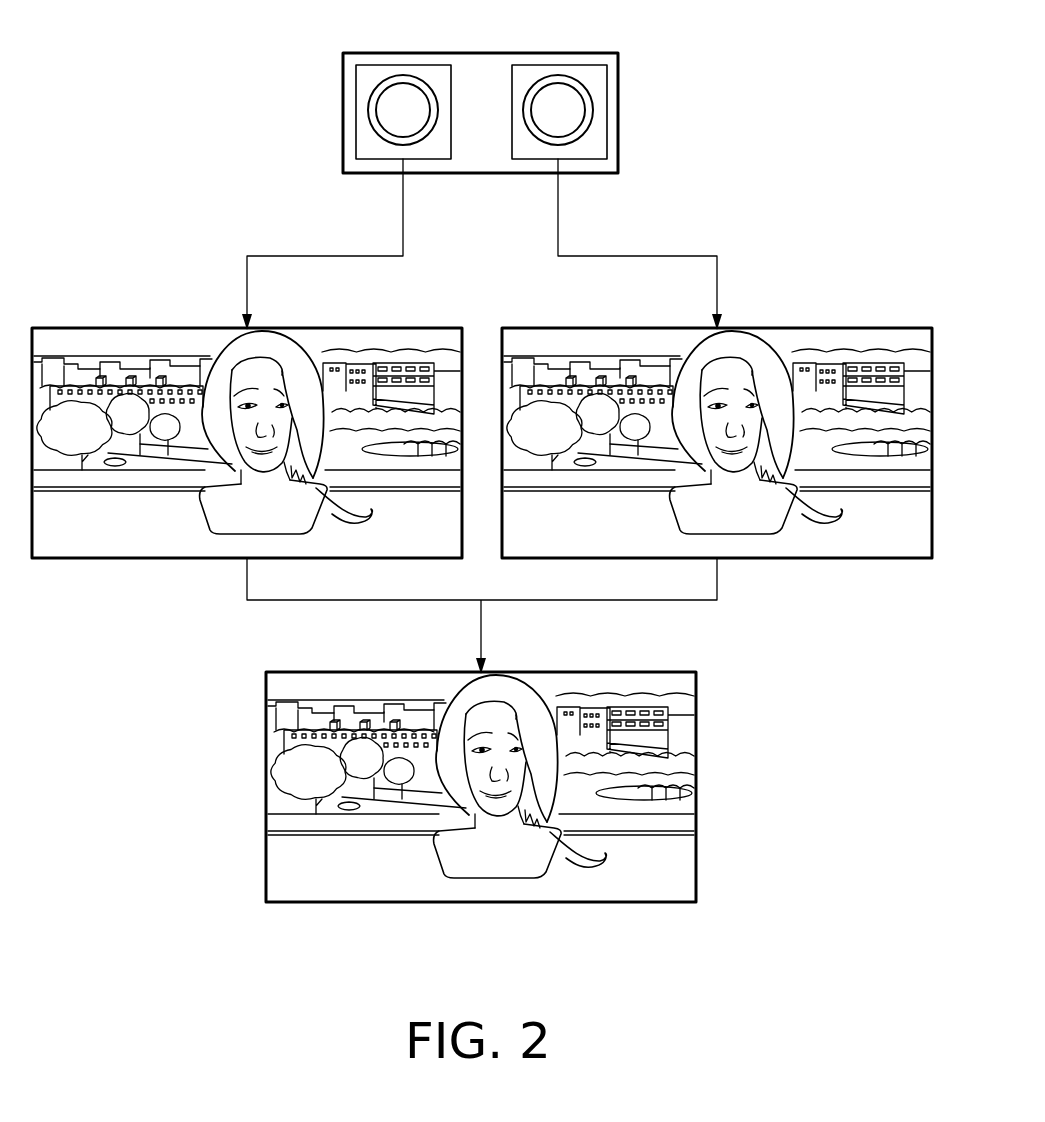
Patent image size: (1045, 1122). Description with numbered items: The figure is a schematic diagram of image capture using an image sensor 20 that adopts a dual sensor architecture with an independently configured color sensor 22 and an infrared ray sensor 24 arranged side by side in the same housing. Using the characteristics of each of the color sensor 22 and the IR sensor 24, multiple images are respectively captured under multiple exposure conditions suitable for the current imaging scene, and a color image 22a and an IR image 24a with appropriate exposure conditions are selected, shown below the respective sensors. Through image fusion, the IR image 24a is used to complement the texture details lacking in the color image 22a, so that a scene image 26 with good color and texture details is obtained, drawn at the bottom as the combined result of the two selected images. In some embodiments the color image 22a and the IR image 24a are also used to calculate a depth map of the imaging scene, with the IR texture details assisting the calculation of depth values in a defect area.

The image sensor 20 is at (563, 53).
The color sensor 22 is at (392, 112).
The infrared ray (IR) sensor 24 is at (570, 112).
The color image 22a is at (405, 328).
The IR image 24a is at (877, 328).
The scene image 26 is at (642, 672).